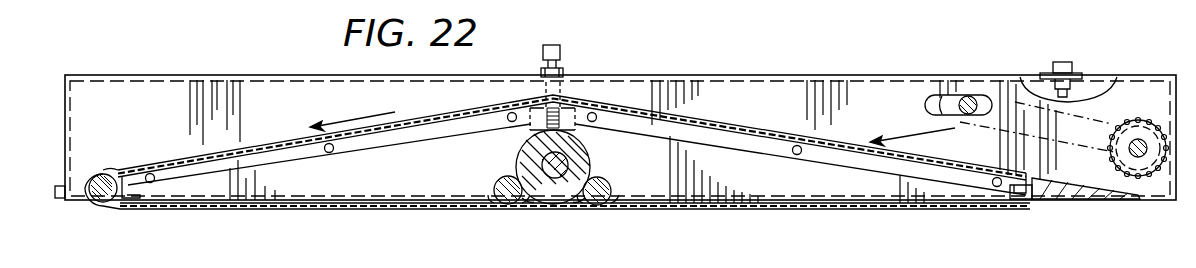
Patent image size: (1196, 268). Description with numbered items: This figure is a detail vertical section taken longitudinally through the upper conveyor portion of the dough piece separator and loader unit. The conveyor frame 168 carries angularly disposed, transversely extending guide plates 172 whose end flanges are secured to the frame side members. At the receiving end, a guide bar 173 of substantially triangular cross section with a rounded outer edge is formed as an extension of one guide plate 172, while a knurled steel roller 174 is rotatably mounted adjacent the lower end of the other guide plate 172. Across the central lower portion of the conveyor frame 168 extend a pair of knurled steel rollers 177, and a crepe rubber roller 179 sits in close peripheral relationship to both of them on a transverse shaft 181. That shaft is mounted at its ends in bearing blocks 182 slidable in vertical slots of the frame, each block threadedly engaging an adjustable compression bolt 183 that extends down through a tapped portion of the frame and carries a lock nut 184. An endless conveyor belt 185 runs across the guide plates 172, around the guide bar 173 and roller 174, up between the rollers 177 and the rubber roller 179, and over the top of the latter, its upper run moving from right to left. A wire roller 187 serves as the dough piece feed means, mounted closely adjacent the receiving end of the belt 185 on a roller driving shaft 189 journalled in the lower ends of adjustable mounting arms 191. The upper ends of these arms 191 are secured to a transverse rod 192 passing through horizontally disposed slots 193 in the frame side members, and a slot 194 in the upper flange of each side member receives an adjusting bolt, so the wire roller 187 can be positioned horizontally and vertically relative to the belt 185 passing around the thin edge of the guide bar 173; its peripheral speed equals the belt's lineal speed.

The conveyor frame 168 is at (256, 48).
The guide plates 172 is at (262, 149).
The guide bar 173 is at (1100, 200).
The knurled steel roller 174 is at (100, 200).
The knurled steel rollers 177 is at (494, 179).
The crepe rubber roller 179 is at (536, 197).
The transverse shaft 181 is at (589, 160).
The bearing blocks 182 is at (530, 132).
The adjustable compression bolt 183 is at (559, 46).
The lock nut 184 is at (564, 72).
The endless conveyor belt 185 is at (732, 126).
The wire roller 187 is at (1160, 100).
The roller driving shaft 189 is at (1144, 158).
The mounting arms 191 is at (1002, 145).
The transverse rod 192 is at (966, 95).
The slots 193 is at (926, 103).
The slot 194 is at (1082, 72).